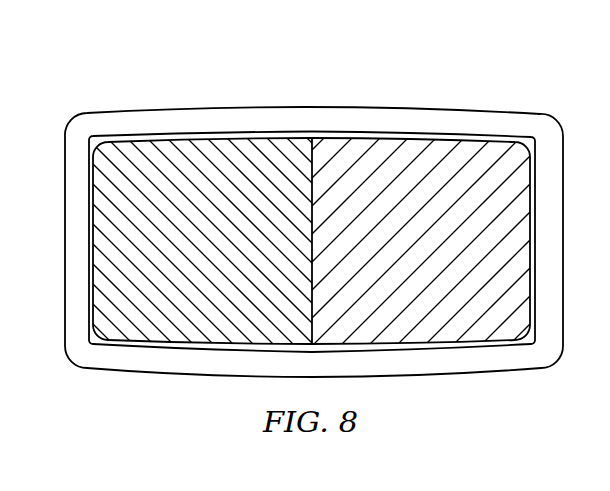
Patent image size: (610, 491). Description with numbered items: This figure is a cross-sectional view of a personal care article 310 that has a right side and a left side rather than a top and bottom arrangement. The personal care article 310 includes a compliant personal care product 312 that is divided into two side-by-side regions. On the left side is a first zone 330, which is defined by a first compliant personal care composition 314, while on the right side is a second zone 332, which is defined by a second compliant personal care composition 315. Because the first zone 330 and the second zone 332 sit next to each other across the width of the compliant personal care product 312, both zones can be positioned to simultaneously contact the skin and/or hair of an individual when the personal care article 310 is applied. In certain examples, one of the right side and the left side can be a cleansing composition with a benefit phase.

The personal care article 310 is at (305, 226).
The compliant personal care product 312 is at (305, 246).
The first compliant personal care composition 314 is at (154, 333).
The second compliant personal care composition 315 is at (480, 330).
The first zone 330 is at (188, 350).
The second zone 332 is at (433, 348).